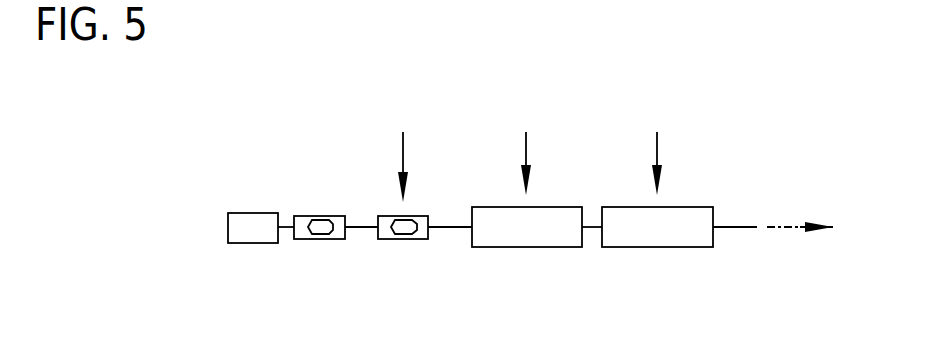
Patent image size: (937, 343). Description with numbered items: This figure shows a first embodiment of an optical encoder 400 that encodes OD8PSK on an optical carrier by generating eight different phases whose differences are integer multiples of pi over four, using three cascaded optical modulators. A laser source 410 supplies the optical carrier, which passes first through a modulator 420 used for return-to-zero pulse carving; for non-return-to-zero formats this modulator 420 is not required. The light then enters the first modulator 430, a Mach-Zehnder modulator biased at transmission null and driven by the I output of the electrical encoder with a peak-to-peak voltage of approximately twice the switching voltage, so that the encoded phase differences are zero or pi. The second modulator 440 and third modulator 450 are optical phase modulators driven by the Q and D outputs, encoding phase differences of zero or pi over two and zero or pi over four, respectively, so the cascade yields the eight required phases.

The optical encoder 400 is at (430, 162).
The laser source 410 is at (192, 260).
The modulator 420 is at (270, 192).
The first modulator 430 is at (355, 259).
The second modulator 440 is at (485, 255).
The third modulator 450 is at (614, 255).